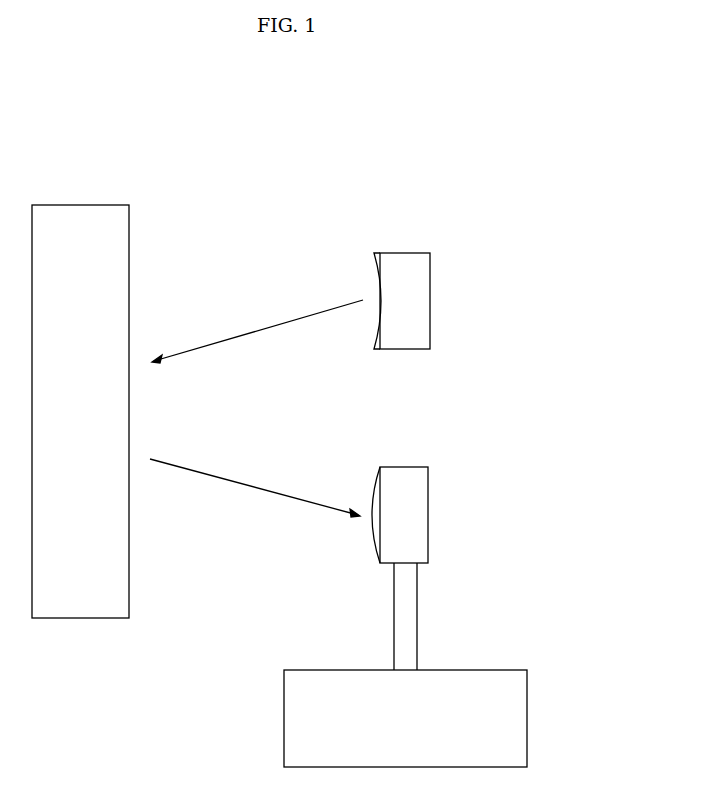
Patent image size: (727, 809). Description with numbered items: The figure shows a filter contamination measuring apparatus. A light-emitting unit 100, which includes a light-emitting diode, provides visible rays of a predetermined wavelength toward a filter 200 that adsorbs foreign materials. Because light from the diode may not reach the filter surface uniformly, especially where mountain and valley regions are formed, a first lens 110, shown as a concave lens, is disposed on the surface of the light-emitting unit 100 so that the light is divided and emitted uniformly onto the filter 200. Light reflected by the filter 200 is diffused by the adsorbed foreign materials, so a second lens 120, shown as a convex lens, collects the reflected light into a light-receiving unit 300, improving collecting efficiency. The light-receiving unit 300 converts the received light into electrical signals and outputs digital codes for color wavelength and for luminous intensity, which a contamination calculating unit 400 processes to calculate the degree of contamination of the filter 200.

The light-emitting unit 100 is at (397, 294).
The first lens 110 is at (375, 259).
The second lens 120 is at (370, 492).
The filter 200 is at (129, 604).
The light-receiving unit 300 is at (409, 491).
The contamination calculating unit 400 is at (527, 752).